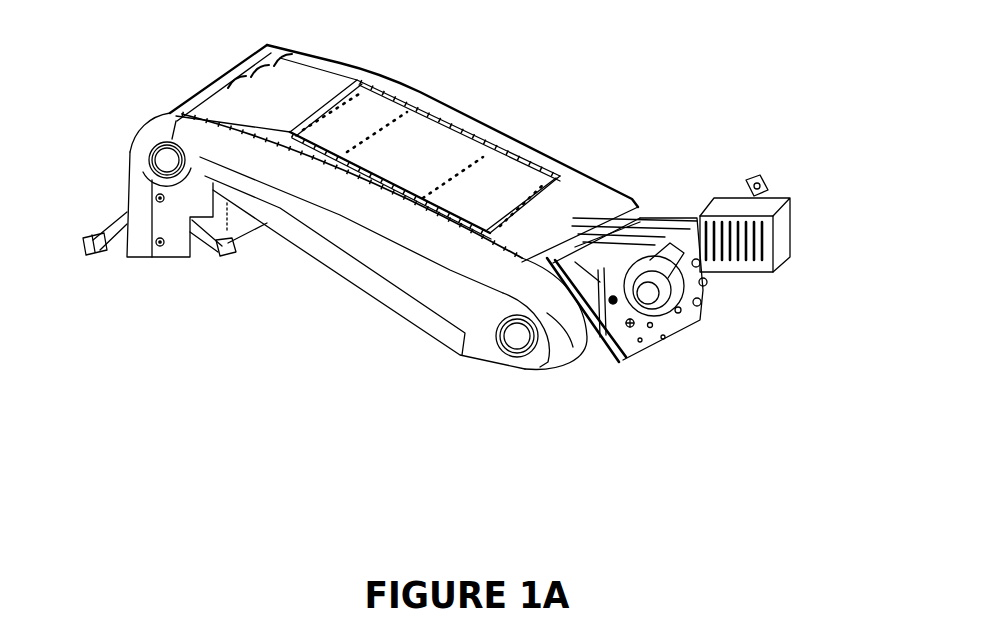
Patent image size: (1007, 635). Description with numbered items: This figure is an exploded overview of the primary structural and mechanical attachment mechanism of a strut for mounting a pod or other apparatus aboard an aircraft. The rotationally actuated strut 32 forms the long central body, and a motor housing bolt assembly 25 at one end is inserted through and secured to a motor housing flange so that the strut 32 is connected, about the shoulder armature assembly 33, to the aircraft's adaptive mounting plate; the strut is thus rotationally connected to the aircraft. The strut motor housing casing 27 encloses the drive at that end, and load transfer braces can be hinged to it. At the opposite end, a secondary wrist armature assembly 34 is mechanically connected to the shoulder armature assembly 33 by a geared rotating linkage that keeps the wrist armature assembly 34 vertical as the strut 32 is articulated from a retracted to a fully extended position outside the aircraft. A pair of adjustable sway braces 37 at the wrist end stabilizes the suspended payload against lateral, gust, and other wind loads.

The motor housing bolt assembly 25 is at (697, 322).
The strut motor housing casing 27 is at (623, 333).
The strut 32 is at (386, 265).
The shoulder armature assembly 33 is at (517, 336).
The secondary wrist armature assembly 34 is at (167, 160).
The adjustable sway braces 37 is at (95, 248).